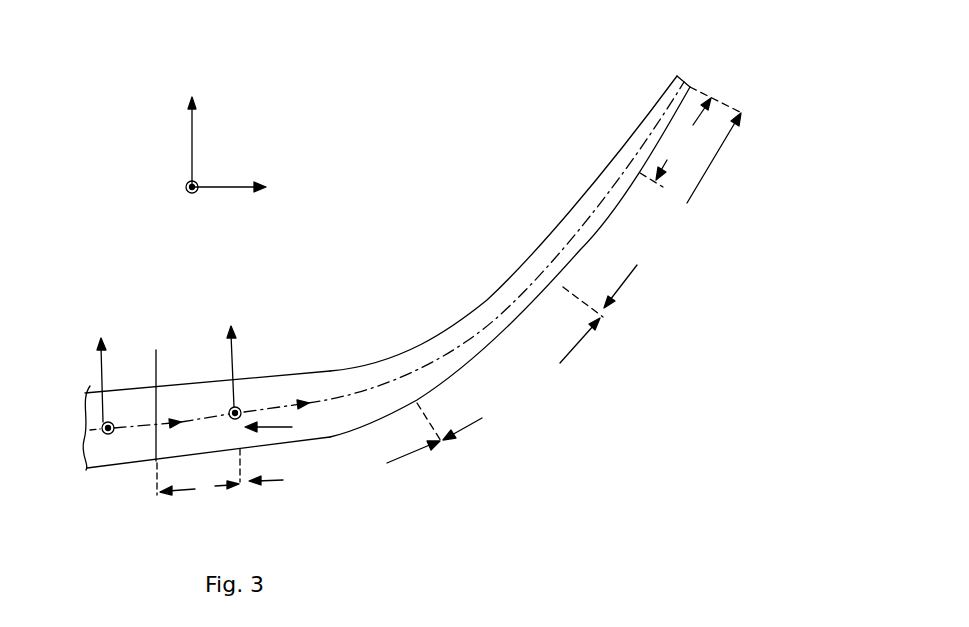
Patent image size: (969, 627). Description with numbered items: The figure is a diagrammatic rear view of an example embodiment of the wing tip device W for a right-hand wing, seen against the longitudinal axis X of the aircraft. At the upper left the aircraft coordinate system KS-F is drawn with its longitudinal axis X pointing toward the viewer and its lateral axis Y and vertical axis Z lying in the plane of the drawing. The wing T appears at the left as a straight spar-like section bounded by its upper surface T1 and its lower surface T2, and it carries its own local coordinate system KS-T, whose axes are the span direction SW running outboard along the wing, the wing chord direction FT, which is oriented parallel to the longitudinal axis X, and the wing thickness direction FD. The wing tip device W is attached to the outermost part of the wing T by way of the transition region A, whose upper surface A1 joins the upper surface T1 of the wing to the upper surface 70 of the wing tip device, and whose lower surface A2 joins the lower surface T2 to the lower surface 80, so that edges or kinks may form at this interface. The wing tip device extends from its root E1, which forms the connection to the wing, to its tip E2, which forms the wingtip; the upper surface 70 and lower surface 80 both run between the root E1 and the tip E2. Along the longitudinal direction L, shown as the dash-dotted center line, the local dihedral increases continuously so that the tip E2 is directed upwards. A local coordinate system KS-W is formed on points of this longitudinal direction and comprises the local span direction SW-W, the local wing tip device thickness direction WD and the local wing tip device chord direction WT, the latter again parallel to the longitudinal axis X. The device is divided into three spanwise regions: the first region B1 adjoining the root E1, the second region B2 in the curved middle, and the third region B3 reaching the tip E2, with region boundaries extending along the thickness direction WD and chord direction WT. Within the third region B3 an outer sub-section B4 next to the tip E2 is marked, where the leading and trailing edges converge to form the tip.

The aircraft coordinate system KS-F is at (150, 143).
The longitudinal axis of the aircraft X is at (186, 199).
The Y axis of the aircraft coordinate system Y is at (229, 172).
The Z axis of the aircraft coordinate system Z is at (181, 138).
The wing tip device W is at (543, 122).
The upper surface of the wing tip device 70 is at (503, 281).
The lower surface of the wing tip device 80 is at (497, 347).
The longitudinal direction of the wing tip device L is at (586, 212).
The tip of the wing tip device E2 is at (708, 86).
The local coordinate system of the wing tip device KS-W is at (269, 318).
The local span direction of the wing tip device SW-W is at (292, 400).
The first region B1 is at (384, 445).
The second region B2 is at (523, 363).
The third region B3 is at (673, 197).
The outer sub-section of the third region B4 is at (675, 142).
The wing T is at (185, 409).
The upper surface of the wing T1 is at (123, 466).
The lower surface of the wing T2 is at (120, 388).
The local coordinate system of the wing KS-T is at (68, 333).
The wing chord direction FT is at (102, 429).
The wing thickness direction FD is at (102, 366).
The span direction of the wing SW is at (171, 395).
The upper surface of the transition region A1 is at (156, 350).
The lower surface of the transition region A2 is at (163, 440).
The transition region A is at (221, 487).
The local wing tip device chord direction WT is at (238, 404).
The local wing tip device thickness direction WD is at (211, 357).
The root of the wing tip device E1 is at (283, 422).